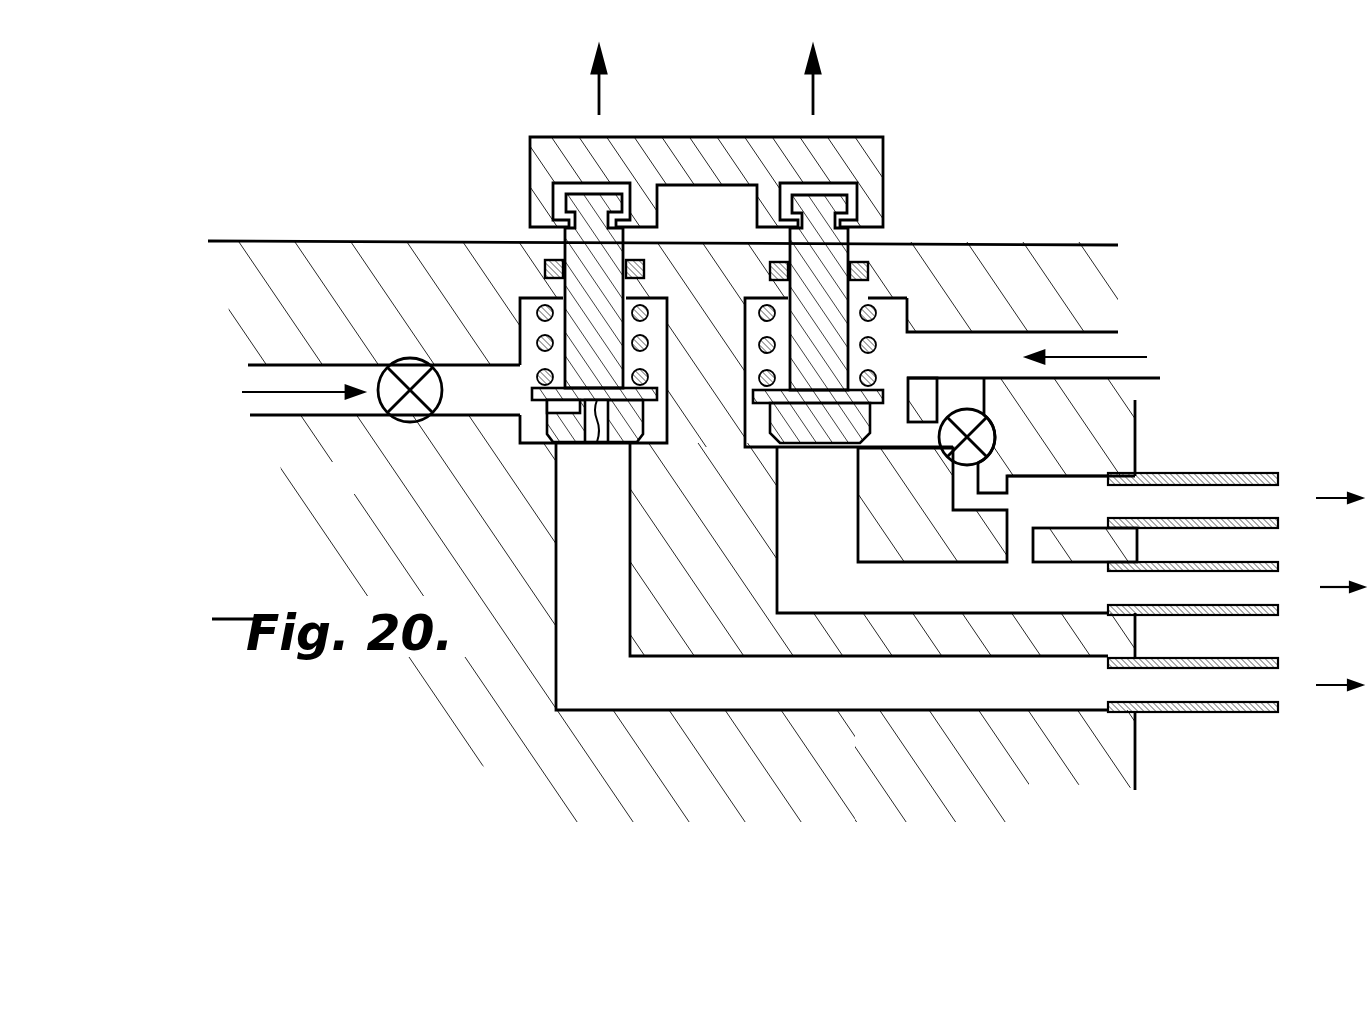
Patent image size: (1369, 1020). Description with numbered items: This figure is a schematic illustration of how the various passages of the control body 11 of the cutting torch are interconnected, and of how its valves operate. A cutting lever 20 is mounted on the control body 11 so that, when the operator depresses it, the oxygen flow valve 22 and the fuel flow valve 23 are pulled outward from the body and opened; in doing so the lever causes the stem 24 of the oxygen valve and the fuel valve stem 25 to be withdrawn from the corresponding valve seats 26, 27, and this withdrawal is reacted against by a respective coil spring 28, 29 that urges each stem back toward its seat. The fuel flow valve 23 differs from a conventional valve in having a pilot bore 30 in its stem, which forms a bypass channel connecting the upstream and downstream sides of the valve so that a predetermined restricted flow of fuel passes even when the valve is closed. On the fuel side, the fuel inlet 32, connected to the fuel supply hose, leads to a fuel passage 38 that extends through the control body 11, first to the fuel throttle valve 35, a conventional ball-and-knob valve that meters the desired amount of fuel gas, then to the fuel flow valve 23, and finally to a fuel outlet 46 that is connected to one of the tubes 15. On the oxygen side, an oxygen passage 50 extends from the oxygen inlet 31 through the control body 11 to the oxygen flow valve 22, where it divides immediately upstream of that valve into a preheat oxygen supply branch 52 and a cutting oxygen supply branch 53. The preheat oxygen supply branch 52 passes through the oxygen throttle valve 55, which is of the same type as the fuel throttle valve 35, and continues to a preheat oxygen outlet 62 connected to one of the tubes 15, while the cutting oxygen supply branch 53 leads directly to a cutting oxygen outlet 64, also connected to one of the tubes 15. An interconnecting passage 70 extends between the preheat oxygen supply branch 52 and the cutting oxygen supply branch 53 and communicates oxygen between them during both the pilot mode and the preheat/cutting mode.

The control body 11 is at (1028, 258).
The cutting lever 20 is at (735, 139).
The oxygen flow valve 22 is at (853, 226).
The fuel flow valve 23 is at (572, 238).
The stem 24 is at (828, 371).
The fuel valve stem 25 is at (548, 368).
The valve seat 26 is at (792, 452).
The valve seat 27 is at (577, 443).
The coil spring 28 is at (867, 305).
The coil spring 29 is at (527, 293).
The pilot bore 30 is at (597, 442).
The oxygen inlet 31 is at (1127, 342).
The fuel inlet 32 is at (290, 368).
The fuel throttle valve 35 is at (405, 414).
The fuel passage 38 is at (327, 418).
The fuel outlet 46 is at (1098, 712).
The oxygen passage 50 is at (1058, 330).
The preheat oxygen supply branch 52 is at (998, 434).
The cutting oxygen supply branch 53 is at (937, 383).
The oxygen throttle valve 55 is at (958, 463).
The preheat oxygen outlet 62 is at (1078, 528).
The cutting oxygen outlet 64 is at (1045, 620).
The interconnecting passage 70 is at (1007, 548).
The tubes 15 is at (1252, 473).